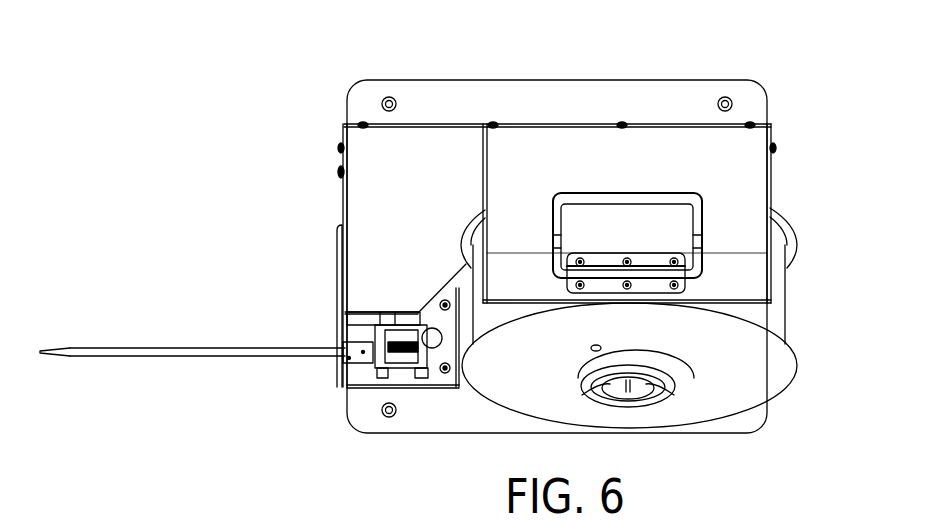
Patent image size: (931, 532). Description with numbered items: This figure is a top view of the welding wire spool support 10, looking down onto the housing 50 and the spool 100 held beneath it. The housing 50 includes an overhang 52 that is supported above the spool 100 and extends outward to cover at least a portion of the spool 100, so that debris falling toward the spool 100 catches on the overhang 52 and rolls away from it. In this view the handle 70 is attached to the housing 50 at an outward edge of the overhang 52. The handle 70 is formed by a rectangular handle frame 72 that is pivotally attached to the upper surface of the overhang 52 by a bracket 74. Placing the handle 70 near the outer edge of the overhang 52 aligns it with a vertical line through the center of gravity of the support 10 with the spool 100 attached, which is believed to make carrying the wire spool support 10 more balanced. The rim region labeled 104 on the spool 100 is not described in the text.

The welding wire spool support 10 is at (302, 260).
The housing 50 is at (707, 151).
The overhang 52 is at (512, 272).
The handle 70 is at (703, 222).
The handle frame 72 is at (588, 192).
The bracket 74 is at (650, 260).
The spool 100 is at (786, 295).
The drum rim 104 is at (793, 232).